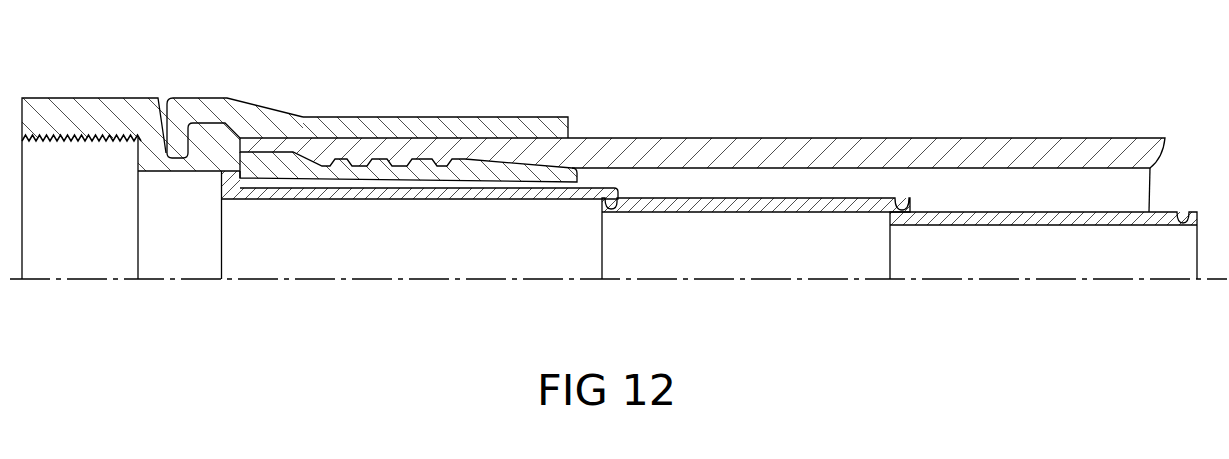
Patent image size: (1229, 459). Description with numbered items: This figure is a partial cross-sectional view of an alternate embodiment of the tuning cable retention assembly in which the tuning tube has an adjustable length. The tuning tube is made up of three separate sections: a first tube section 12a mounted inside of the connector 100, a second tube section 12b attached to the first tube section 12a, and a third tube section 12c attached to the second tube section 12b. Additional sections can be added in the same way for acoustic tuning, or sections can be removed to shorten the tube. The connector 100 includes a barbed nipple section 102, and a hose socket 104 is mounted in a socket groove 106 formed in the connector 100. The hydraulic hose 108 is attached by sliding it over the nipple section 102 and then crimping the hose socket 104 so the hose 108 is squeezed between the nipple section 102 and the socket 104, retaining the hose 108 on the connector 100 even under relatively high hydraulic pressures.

The connector 100 is at (113, 110).
The barbed nipple section 102 is at (547, 173).
The hose socket 104 is at (428, 126).
The socket groove 106 is at (203, 134).
The hydraulic hose 108 is at (965, 150).
The first tube section 12a is at (465, 193).
The second tube section 12b is at (750, 205).
The third tube section 12c is at (1052, 218).